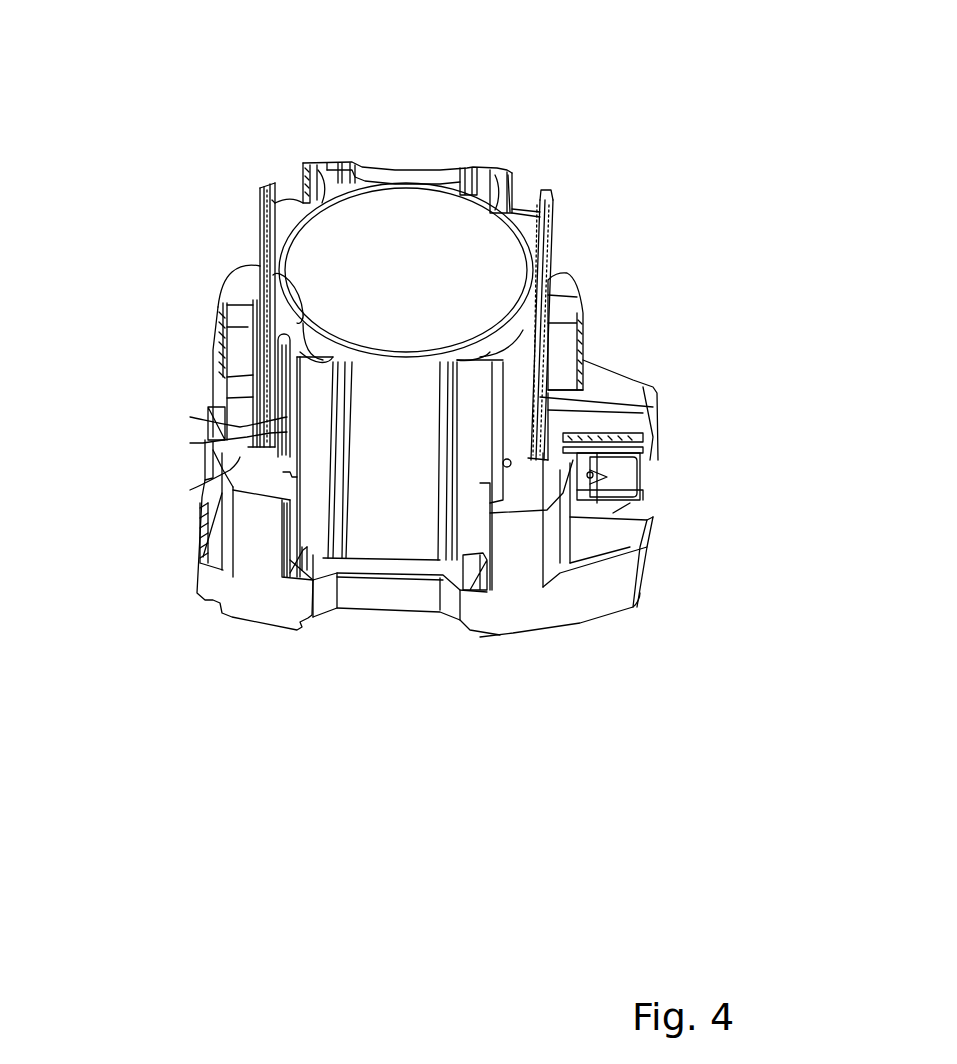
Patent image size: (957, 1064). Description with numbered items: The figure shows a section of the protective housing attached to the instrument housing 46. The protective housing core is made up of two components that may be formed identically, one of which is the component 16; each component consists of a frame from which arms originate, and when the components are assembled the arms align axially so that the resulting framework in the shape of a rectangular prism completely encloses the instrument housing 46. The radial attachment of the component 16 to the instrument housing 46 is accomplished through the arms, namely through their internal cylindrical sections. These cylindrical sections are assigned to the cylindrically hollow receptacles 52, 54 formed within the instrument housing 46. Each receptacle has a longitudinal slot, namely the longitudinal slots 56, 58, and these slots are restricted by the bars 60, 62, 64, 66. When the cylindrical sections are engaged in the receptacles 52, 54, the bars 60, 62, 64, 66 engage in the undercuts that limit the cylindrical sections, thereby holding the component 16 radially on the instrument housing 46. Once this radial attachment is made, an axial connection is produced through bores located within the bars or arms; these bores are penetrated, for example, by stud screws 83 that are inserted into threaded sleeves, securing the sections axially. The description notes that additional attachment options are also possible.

The component 16 is at (643, 500).
The instrument housing 46 is at (583, 300).
The cylindrically hollow receptacle 52 is at (220, 422).
The cylindrically hollow receptacle 54 is at (518, 197).
The longitudinal slot 56 is at (230, 263).
The longitudinal slot 58 is at (516, 197).
The bar 60 is at (232, 477).
The bar 62 is at (232, 338).
The bar 64 is at (553, 203).
The bar 66 is at (505, 177).
The stud screw 83 is at (225, 437).